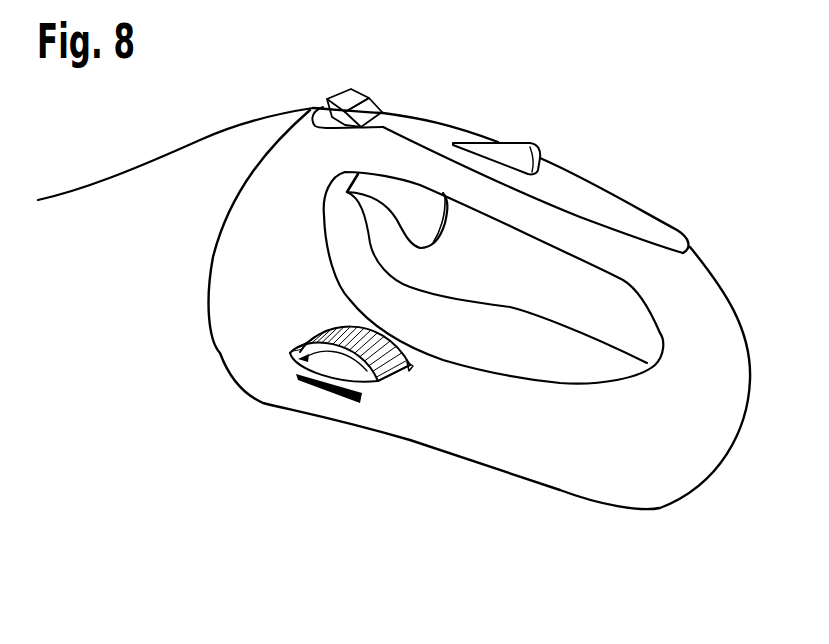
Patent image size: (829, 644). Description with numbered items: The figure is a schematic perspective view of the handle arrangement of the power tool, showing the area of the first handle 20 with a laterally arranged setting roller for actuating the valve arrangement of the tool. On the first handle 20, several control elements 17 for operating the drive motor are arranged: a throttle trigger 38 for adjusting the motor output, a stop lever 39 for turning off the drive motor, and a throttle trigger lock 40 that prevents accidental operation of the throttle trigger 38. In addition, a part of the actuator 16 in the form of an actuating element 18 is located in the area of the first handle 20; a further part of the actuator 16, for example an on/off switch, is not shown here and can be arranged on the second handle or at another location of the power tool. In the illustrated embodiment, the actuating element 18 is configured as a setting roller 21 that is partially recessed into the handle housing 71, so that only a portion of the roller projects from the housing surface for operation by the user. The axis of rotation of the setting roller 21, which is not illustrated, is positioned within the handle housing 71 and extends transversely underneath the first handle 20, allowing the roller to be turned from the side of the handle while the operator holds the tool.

The actuator 16 is at (327, 410).
The control elements 17 is at (410, 165).
The actuating element 18 is at (303, 348).
The first handle 20 is at (647, 227).
The setting roller 21 is at (386, 383).
The throttle trigger 38 is at (445, 222).
The stop lever 39 is at (343, 97).
The throttle trigger lock 40 is at (530, 141).
The handle housing 71 is at (598, 452).